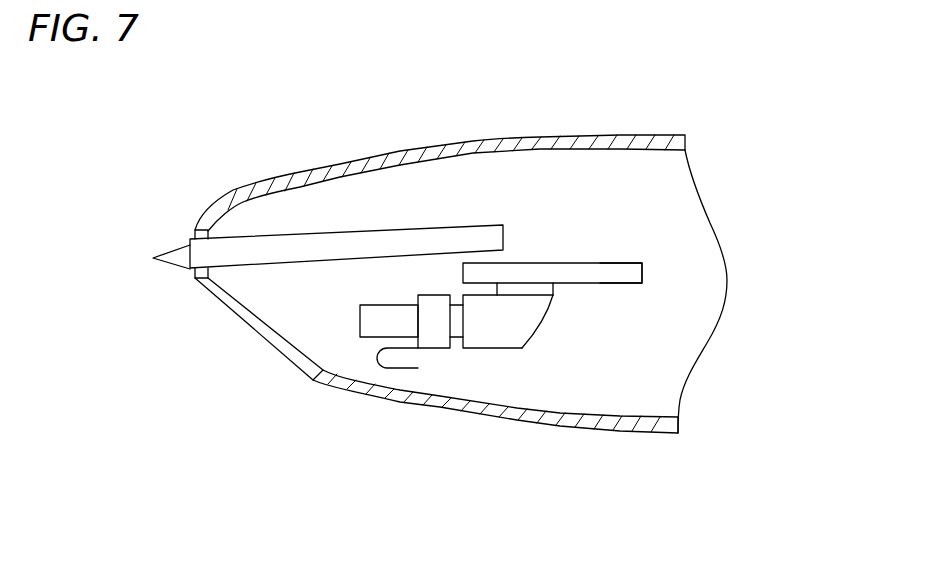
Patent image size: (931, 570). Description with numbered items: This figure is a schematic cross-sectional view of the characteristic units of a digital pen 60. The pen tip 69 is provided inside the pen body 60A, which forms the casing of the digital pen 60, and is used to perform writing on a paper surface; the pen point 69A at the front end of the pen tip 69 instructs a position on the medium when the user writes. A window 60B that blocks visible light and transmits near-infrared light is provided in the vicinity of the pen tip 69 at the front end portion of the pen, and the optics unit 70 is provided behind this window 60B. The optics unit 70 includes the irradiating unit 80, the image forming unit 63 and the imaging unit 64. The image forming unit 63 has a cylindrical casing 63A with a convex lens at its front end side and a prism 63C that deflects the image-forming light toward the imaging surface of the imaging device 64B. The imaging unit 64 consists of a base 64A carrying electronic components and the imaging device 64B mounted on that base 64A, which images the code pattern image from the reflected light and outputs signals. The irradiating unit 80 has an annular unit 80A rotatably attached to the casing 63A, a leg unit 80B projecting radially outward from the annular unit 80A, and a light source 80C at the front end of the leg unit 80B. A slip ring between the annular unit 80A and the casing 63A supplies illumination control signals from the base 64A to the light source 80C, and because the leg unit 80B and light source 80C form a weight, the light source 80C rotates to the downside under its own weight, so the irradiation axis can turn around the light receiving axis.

The digital pen 60 is at (342, 112).
The pen body 60A is at (393, 162).
The window 60B is at (237, 307).
The pen tip 69 is at (287, 237).
The pen point 69A is at (153, 258).
The imaging unit 64 is at (693, 85).
The base (substrate) 64A is at (628, 273).
The imaging device 64B is at (547, 283).
The optics unit 70 is at (647, 256).
The image forming unit 63 is at (295, 356).
The cylindrical casing 63A is at (366, 322).
The prism 63C is at (518, 322).
The irradiating unit 80 is at (407, 373).
The annular unit 80A is at (438, 328).
The leg unit 80B is at (437, 348).
The light source 80C is at (383, 358).